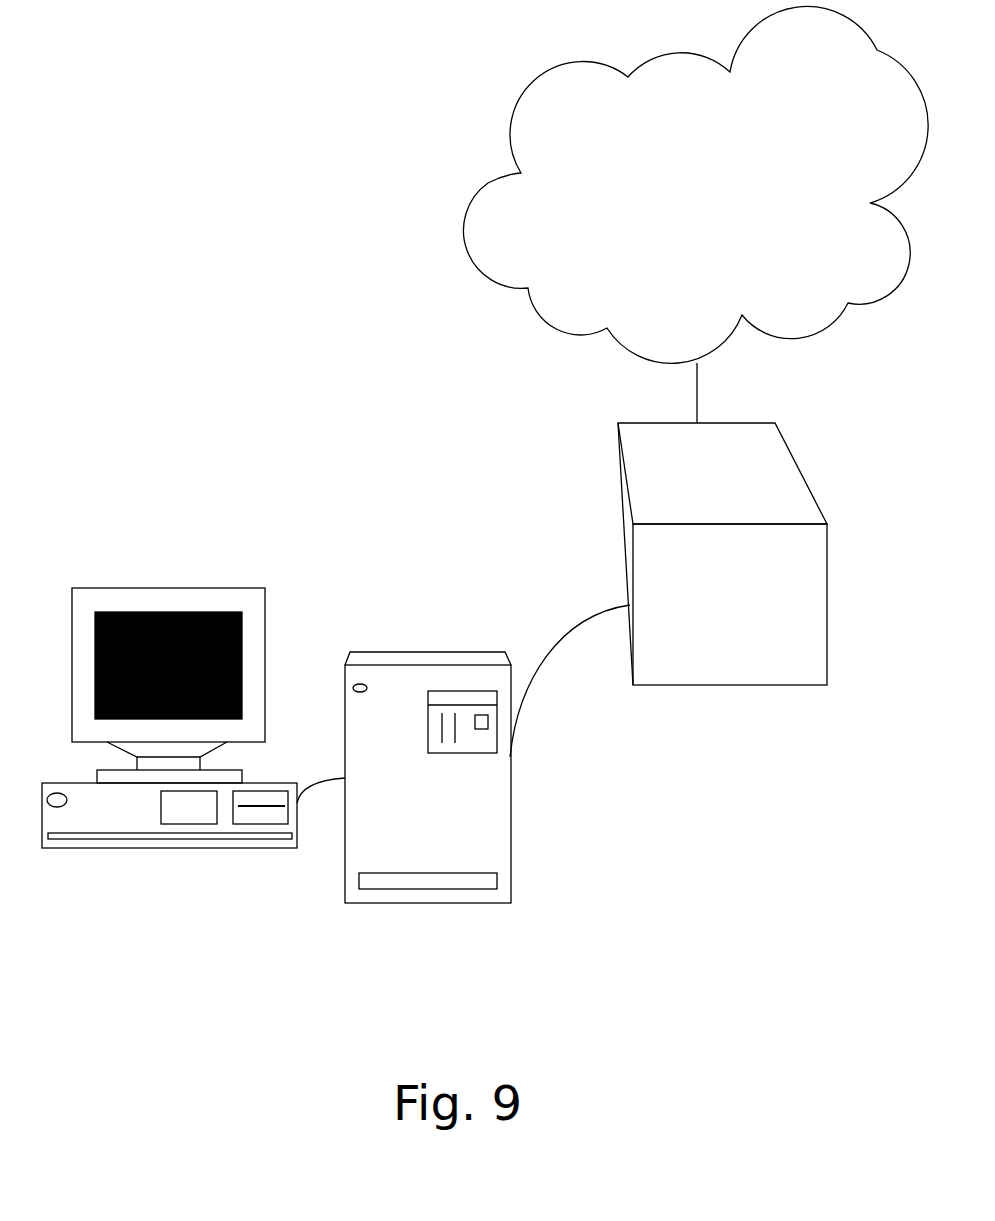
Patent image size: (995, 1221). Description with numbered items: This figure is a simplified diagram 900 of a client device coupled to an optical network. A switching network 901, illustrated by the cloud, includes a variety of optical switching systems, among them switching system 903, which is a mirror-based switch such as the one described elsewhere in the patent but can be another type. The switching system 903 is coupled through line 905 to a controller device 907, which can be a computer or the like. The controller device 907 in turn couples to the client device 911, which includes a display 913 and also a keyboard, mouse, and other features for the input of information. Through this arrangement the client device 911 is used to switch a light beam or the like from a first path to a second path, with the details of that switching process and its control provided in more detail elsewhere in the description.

The simplified diagram 900 is at (230, 113).
The switching network 901 is at (487, 183).
The switching system 903 is at (630, 523).
The line 905 is at (602, 608).
The controller device 907 is at (428, 652).
The client device 911 is at (170, 848).
The display 913 is at (167, 588).